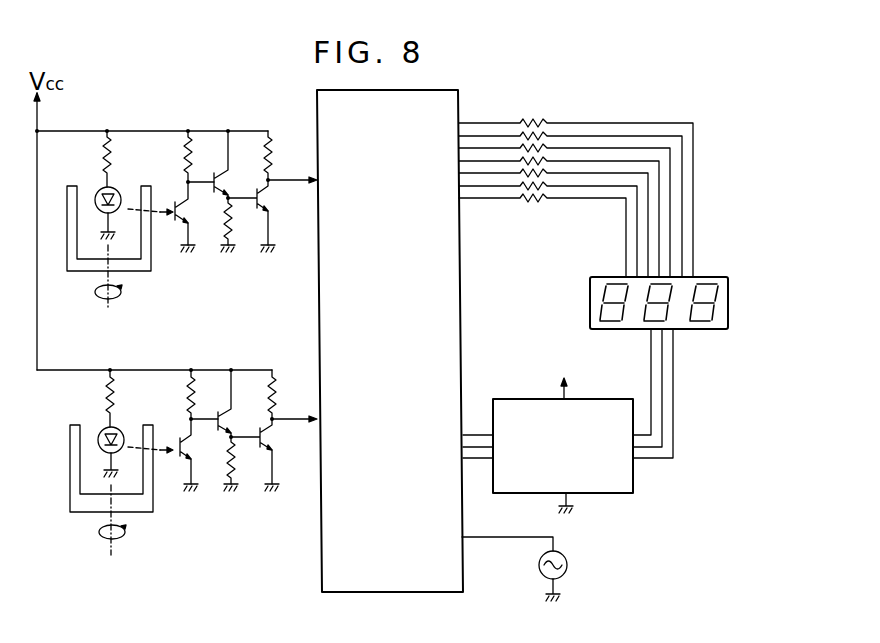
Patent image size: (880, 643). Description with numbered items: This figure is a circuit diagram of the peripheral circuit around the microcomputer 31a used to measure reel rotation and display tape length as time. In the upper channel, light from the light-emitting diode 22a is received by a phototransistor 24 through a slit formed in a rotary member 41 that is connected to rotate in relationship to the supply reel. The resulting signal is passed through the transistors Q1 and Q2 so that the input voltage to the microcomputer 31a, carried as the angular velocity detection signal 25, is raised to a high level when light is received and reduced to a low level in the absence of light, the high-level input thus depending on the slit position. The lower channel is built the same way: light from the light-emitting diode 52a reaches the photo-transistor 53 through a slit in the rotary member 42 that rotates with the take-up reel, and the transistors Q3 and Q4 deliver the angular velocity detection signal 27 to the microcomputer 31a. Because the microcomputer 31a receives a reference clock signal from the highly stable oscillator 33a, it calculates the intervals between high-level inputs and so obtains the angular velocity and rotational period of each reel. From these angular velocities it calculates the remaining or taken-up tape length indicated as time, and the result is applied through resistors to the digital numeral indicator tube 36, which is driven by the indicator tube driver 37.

The light-emitting diode 22a is at (103, 184).
The phototransistor 24 is at (177, 201).
The angular velocity detection signal for the supply reel 25 is at (297, 178).
The rotary member 41 is at (152, 252).
The transistor Q1 is at (223, 181).
The transistor Q2 is at (269, 196).
The light-emitting diode 52a is at (100, 425).
The photo-transistor 53 is at (180, 440).
The angular velocity detection signal for the take-up reel 27 is at (297, 417).
The rotary member 42 is at (153, 497).
The transistor Q3 is at (224, 424).
The transistor Q4 is at (272, 438).
The microcomputer 31a is at (459, 110).
The digital numeral indicator tube 36 is at (712, 275).
The indicator tube driver 37 is at (633, 477).
The oscillator 33a is at (567, 557).